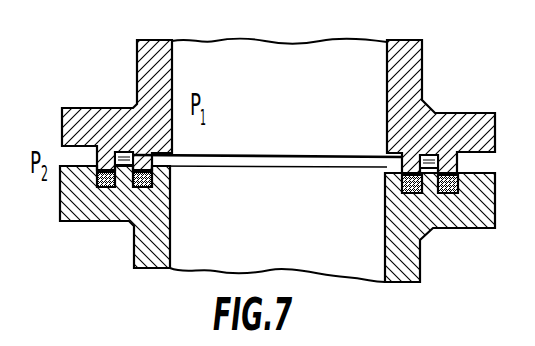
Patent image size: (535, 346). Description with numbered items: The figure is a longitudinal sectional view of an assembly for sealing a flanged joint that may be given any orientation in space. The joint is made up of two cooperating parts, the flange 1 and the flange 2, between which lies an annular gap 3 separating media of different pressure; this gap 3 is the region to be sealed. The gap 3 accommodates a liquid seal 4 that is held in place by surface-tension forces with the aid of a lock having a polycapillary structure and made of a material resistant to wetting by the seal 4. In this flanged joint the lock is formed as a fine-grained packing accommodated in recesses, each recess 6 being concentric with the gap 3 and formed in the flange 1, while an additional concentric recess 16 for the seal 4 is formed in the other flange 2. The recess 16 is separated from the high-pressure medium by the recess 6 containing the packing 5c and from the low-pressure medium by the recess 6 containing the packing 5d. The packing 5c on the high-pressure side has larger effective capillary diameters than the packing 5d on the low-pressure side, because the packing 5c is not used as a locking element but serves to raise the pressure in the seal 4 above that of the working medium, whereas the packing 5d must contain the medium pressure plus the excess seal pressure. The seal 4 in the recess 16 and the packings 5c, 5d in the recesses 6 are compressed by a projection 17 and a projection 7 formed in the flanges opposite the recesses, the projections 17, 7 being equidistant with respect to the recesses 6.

The flange 1 is at (128, 200).
The flange 2 is at (150, 78).
The annular gap 3 is at (305, 157).
The liquid seal 4 is at (92, 164).
The packing 5c is at (162, 183).
The packing 5d is at (450, 195).
The recess 6 is at (65, 222).
The projection 7 is at (445, 168).
The additional concentric recess 16 is at (121, 150).
The projection 17 is at (431, 195).